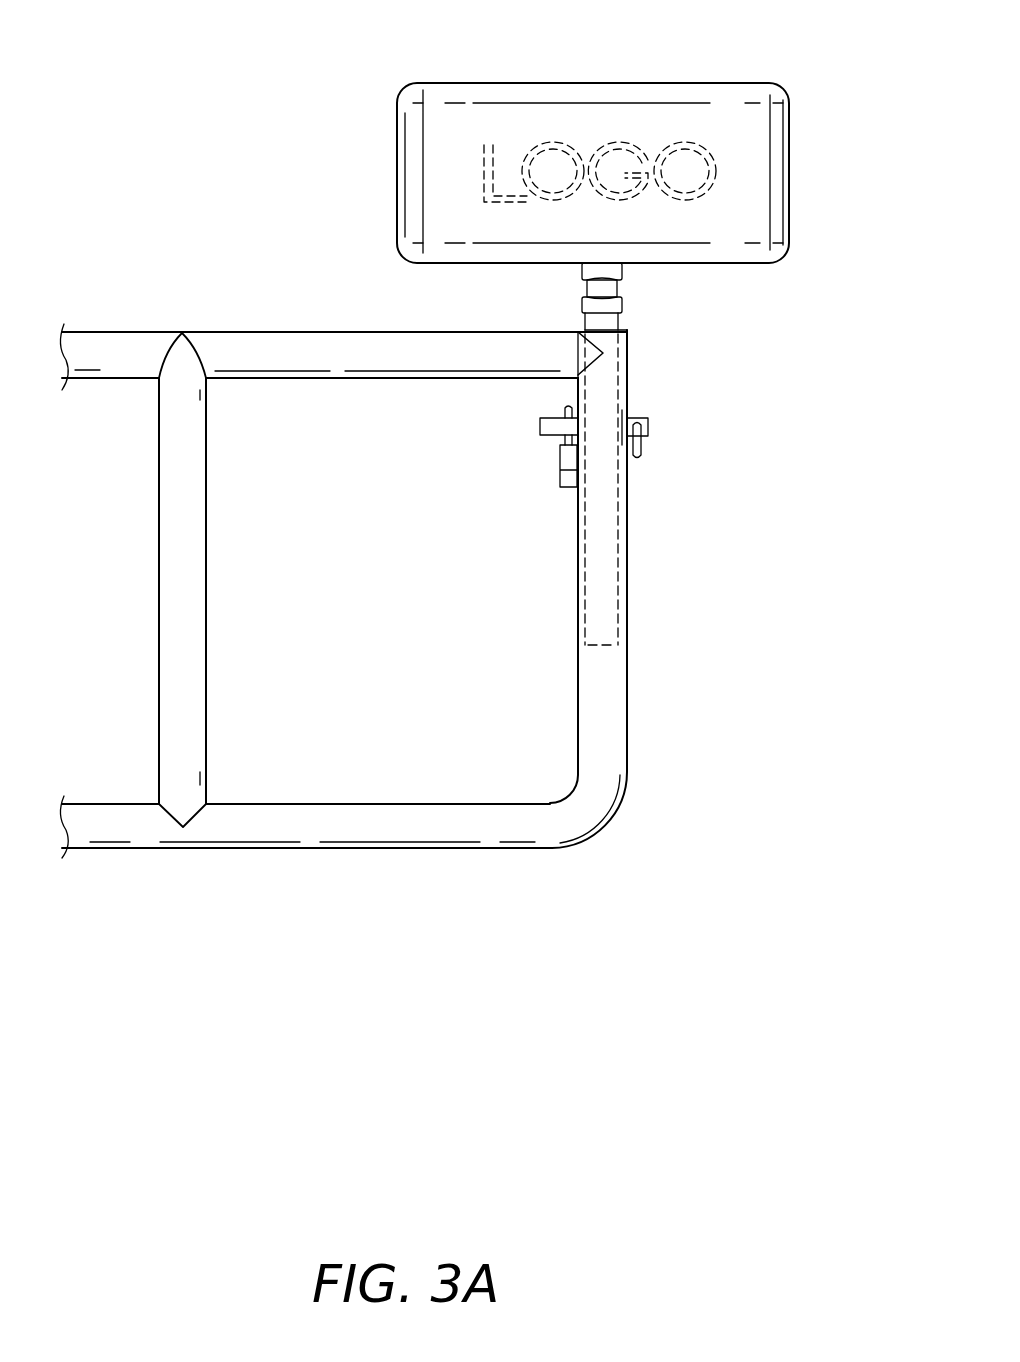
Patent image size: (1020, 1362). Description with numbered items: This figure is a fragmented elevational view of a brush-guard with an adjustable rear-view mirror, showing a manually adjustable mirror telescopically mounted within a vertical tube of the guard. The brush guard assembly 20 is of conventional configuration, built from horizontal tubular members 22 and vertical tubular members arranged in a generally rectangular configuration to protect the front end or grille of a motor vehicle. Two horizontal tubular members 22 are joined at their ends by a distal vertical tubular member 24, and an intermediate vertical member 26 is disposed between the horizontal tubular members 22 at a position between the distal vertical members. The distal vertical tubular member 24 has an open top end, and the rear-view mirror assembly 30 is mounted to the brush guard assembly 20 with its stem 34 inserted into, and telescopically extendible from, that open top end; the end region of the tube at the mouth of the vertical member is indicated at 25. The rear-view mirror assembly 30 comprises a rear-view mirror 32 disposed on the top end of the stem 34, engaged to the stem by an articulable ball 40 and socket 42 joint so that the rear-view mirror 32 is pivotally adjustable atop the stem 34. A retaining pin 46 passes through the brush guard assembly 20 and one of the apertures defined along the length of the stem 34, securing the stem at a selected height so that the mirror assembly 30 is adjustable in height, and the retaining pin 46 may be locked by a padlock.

The brush-guard assembly 20 is at (381, 591).
The horizontal tubular member 22 is at (298, 331).
The distal vertical tubular member 24 is at (629, 652).
The tube end 25 is at (585, 320).
The intermediate vertical member 26 is at (158, 678).
The rear-view mirror assembly 30 is at (812, 316).
The rear-view mirror 32 is at (782, 86).
The stem 34 is at (627, 318).
The ball 40 is at (623, 270).
The socket 42 is at (582, 303).
The retaining pin 46 is at (540, 430).